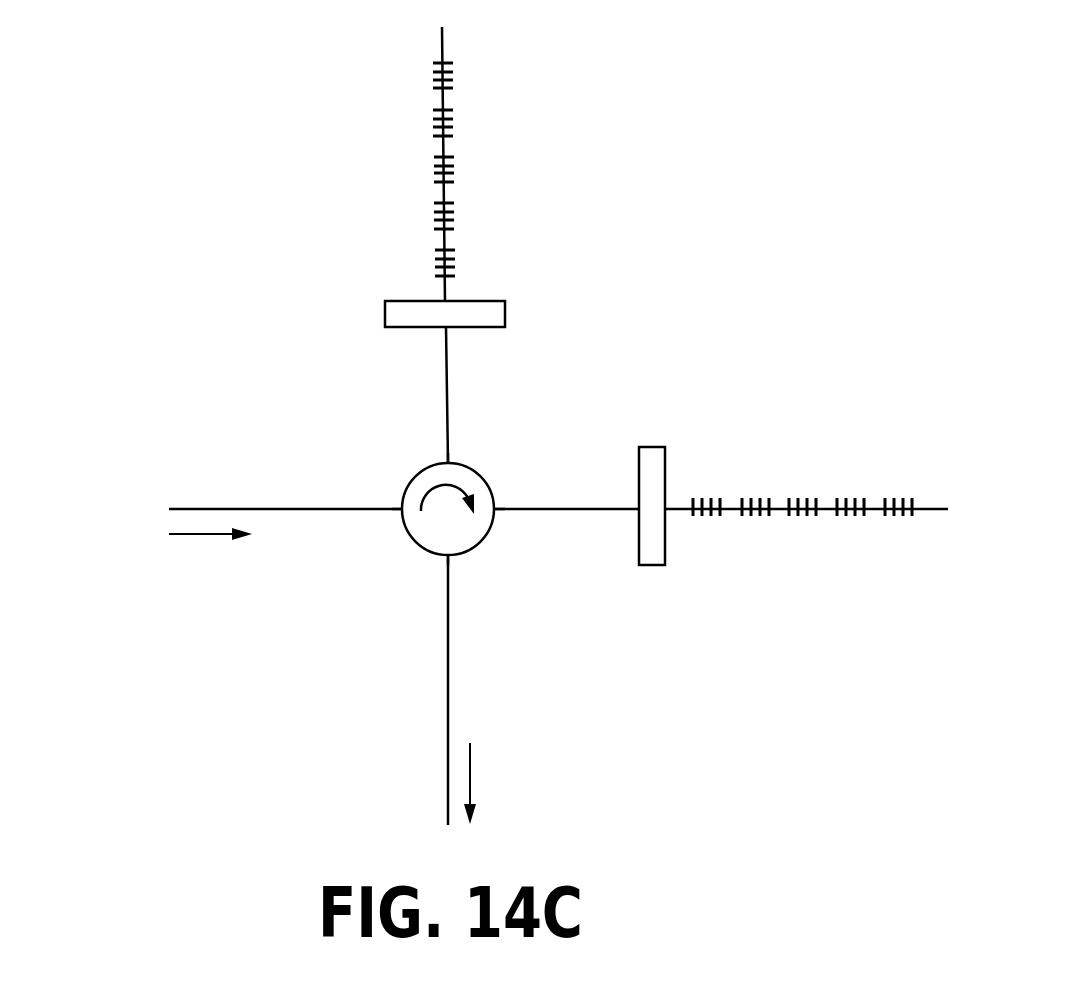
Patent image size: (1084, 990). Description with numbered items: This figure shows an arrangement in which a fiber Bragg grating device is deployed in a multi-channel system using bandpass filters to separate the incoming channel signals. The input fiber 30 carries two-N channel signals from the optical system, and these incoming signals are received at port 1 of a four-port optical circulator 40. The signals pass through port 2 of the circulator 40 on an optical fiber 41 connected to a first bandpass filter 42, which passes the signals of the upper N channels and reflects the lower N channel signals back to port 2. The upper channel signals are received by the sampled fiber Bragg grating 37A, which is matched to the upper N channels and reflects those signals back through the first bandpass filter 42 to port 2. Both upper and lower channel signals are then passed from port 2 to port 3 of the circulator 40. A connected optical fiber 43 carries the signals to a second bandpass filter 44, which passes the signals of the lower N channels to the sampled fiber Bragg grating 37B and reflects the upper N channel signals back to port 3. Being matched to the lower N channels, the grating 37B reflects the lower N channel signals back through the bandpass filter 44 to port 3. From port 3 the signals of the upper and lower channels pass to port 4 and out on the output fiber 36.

The input fiber 30 is at (218, 509).
The four-port optical circulator 40 is at (413, 541).
The optical fiber 41 is at (447, 390).
The first bandpass filter 42 is at (505, 311).
The sampled fiber Bragg grating 37A is at (395, 142).
The optical fiber 43 is at (532, 508).
The second bandpass filter 44 is at (652, 447).
The sampled fiber Bragg grating 37B is at (798, 555).
The output fiber 36 is at (448, 648).
The port 1 is at (389, 492).
The port 2 is at (460, 445).
The port 3 is at (505, 527).
The port 4 is at (433, 573).